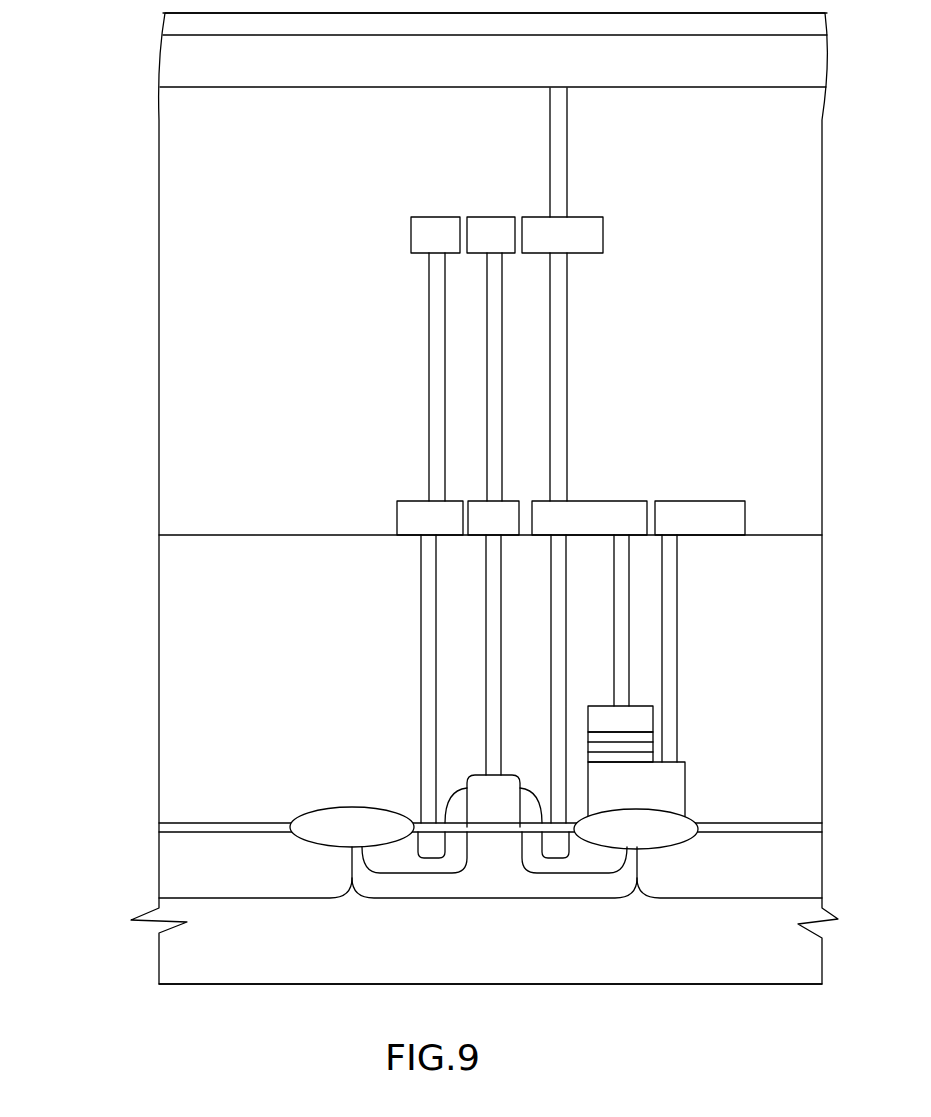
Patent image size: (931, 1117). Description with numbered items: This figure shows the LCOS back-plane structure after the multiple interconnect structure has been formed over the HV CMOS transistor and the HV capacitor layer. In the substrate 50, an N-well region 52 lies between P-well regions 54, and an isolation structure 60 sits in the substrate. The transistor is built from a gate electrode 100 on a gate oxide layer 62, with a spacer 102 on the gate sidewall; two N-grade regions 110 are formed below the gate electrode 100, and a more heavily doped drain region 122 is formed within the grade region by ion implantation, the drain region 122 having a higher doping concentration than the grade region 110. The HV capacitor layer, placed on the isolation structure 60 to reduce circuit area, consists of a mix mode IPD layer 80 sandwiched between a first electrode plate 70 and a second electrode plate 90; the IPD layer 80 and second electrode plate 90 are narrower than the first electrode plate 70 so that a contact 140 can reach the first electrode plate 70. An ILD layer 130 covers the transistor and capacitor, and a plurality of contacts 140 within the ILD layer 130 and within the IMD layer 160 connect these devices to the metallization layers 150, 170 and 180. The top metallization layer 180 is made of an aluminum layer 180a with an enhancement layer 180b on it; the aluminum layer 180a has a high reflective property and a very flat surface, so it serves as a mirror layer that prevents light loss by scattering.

The top metallization layer 180 is at (85, 12).
The aluminum layer 180a is at (183, 70).
The enhancement layer 180b is at (183, 28).
The metallization layer 170 is at (580, 245).
The IMD layer 160 is at (795, 402).
The metallization layer 150 is at (715, 532).
The contact 140 is at (430, 622).
The ILD layer 130 is at (777, 694).
The second electrode plate 90 is at (633, 730).
The mix mode IPD layer 80 is at (582, 759).
The first electrode plate 70 is at (648, 798).
The gate electrode 100 is at (512, 815).
The spacer 102 is at (528, 806).
The gate oxide layer 62 is at (180, 827).
The isolation structure 60 is at (366, 839).
The P-well region 54 is at (298, 870).
The N-well region 52 is at (503, 892).
The substrate 50 is at (707, 949).
The N-grade region 110 is at (374, 857).
The drain region 122 is at (443, 860).